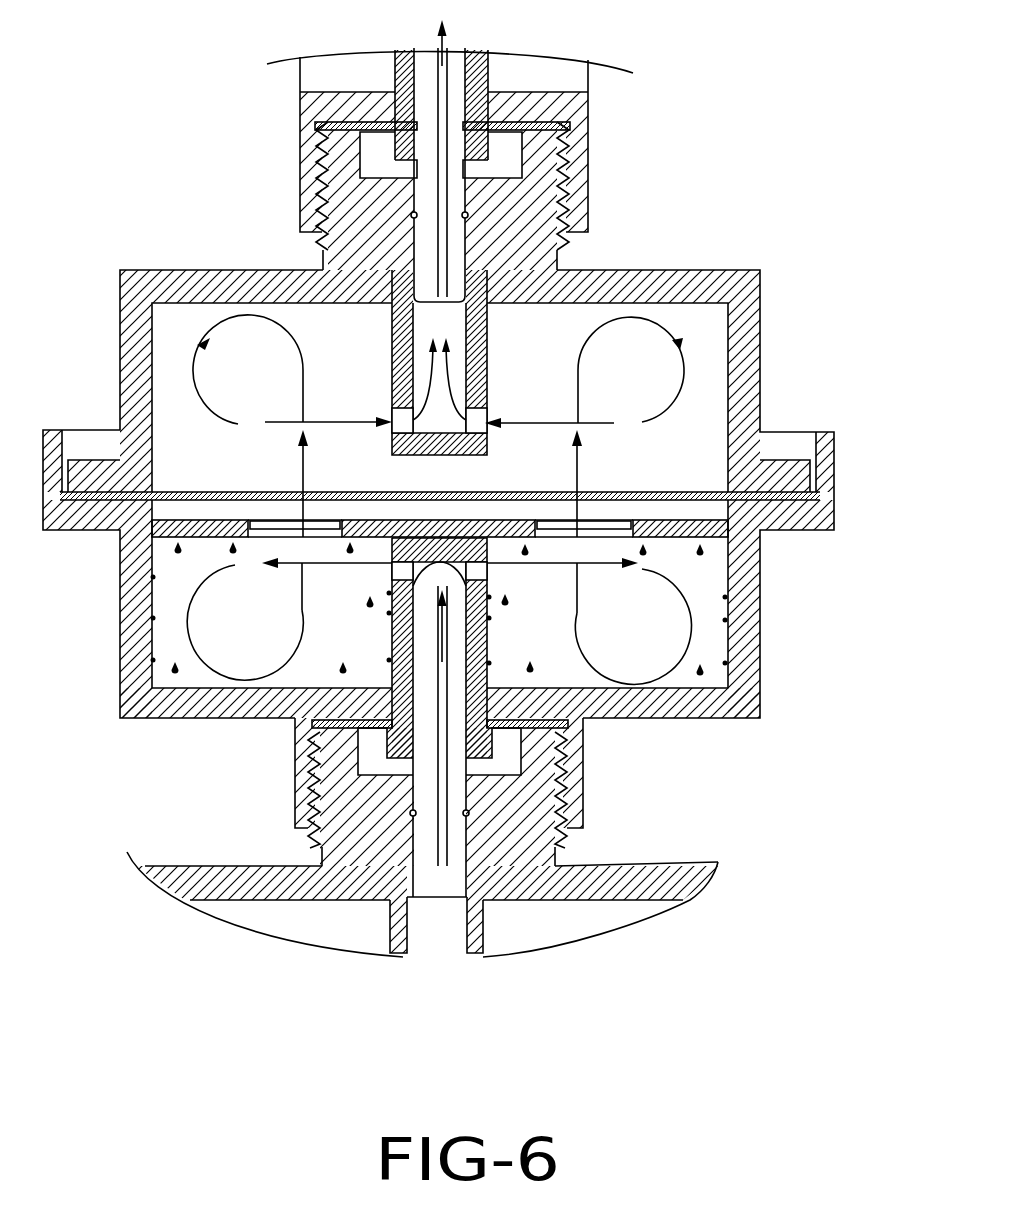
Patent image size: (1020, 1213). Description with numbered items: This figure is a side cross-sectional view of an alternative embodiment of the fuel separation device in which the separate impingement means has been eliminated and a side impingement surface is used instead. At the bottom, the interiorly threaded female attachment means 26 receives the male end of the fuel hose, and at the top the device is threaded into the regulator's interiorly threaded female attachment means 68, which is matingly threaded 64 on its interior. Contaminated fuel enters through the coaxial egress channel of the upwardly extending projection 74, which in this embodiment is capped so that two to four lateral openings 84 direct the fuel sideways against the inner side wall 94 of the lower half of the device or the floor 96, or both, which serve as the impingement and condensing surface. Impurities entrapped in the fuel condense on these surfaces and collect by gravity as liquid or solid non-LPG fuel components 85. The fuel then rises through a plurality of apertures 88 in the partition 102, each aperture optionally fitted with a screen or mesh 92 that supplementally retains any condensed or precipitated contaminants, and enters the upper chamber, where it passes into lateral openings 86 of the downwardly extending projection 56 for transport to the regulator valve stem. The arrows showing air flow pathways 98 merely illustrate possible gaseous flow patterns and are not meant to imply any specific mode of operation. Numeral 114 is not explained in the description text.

The interiorly threaded female attachment means 26 is at (585, 777).
The downwardly extending projection 56 is at (392, 347).
The mating threads 64 is at (550, 246).
The interiorly threaded female attachment means 68 is at (300, 163).
The upwardly extending projection 74 is at (392, 633).
The lateral openings 84 is at (467, 572).
The liquid or solid non-LPG fuel components 85 is at (370, 602).
The lateral openings 86 is at (485, 420).
The apertures 88 is at (265, 522).
The screen or mesh 92 is at (597, 527).
The inner side wall 94 is at (731, 605).
The floor 96 is at (676, 694).
The air flow pathways 98 is at (690, 372).
The partition 102 is at (153, 545).
The support plate 114 is at (512, 530).